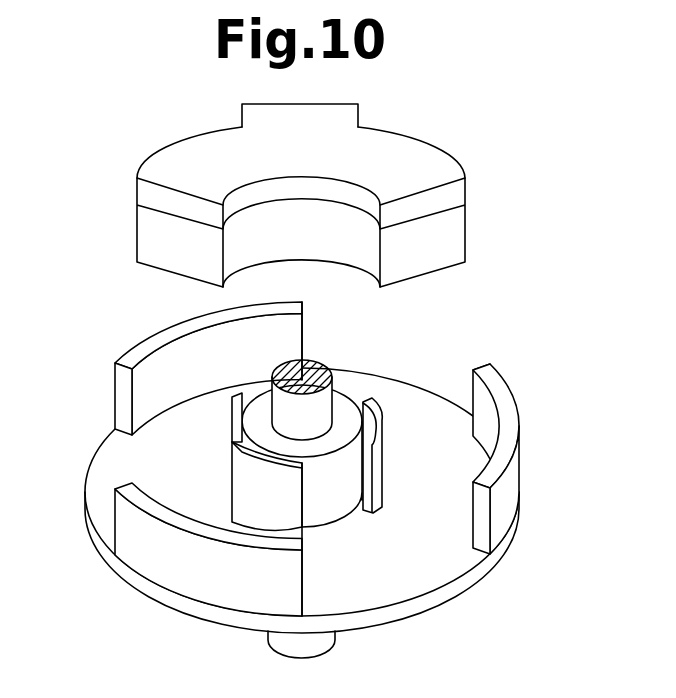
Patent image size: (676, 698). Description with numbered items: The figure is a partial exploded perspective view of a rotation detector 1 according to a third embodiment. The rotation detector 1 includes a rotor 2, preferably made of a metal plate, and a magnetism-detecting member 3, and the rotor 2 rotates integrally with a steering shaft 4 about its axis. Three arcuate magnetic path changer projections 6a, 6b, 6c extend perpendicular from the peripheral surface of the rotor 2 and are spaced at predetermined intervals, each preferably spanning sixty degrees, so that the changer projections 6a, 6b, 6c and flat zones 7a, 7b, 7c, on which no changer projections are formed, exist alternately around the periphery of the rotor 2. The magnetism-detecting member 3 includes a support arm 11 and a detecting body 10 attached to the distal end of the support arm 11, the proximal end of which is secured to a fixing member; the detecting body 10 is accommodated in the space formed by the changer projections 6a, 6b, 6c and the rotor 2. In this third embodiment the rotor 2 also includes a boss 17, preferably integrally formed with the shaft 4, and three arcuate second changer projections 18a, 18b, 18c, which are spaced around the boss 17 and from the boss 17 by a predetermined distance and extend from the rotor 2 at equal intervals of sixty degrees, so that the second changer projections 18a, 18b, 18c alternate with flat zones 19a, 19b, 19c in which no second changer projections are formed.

The rotation detector 1 is at (533, 300).
The rotor 2 is at (272, 499).
The magnetism-detecting member 3 is at (325, 211).
The steering shaft 4 is at (317, 363).
The arcuate magnetic path changer projection 6a is at (170, 330).
The arcuate magnetic path changer projection 6b is at (510, 418).
The arcuate magnetic path changer projection 6c is at (147, 482).
The flat zone 7a is at (427, 395).
The flat zone 7b is at (402, 593).
The flat zone 7c is at (95, 473).
The detecting body 10 is at (353, 267).
The support arm 11 is at (360, 113).
The boss 17 is at (288, 480).
The arcuate second changer projection 18a is at (247, 395).
The arcuate second changer projection 18b is at (380, 463).
The arcuate second changer projection 18c is at (237, 492).
The groove 19a is at (350, 392).
The groove 19b is at (333, 528).
The groove 19c is at (237, 432).